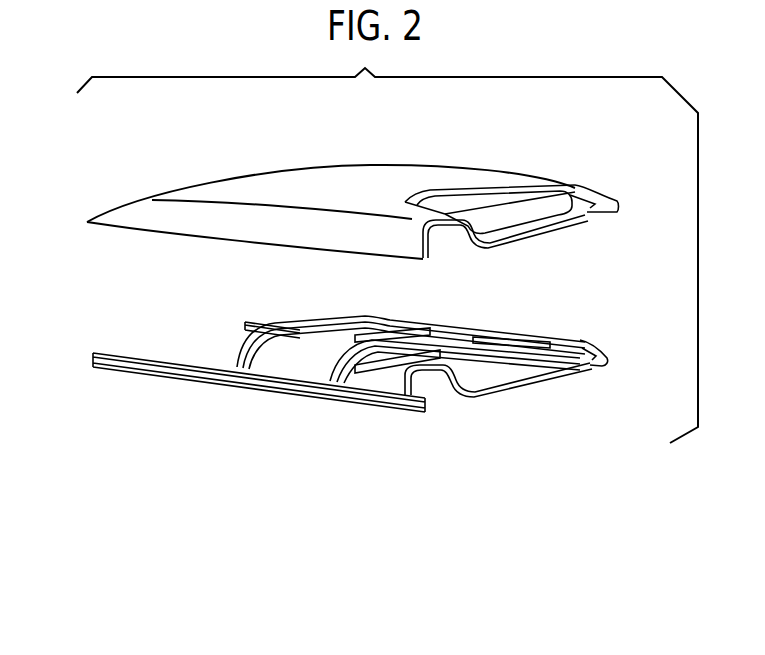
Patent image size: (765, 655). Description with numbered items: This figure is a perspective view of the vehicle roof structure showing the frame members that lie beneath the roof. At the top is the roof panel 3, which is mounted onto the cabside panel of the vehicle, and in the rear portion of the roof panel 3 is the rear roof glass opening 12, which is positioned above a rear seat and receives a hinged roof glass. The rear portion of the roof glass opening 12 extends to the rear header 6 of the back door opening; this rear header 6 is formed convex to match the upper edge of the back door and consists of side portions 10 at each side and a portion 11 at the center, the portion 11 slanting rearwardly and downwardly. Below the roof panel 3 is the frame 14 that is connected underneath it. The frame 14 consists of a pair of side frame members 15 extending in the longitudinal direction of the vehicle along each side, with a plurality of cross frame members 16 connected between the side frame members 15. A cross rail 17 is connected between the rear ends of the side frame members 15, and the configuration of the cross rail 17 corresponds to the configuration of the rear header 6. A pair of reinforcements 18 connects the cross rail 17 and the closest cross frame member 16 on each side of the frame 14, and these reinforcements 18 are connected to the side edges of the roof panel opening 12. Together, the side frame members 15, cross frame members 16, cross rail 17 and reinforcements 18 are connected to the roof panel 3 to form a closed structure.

The roof panel 3 is at (352, 178).
The rear header 6 is at (542, 245).
The side portions 10 is at (445, 229).
The portion 11 is at (572, 227).
The rear roof glass opening 12 is at (508, 198).
The frame 14 is at (350, 368).
The side frame members 15 is at (158, 358).
The cross frame members 16 is at (325, 313).
The cross rail 17 is at (528, 385).
The reinforcements 18 is at (537, 333).